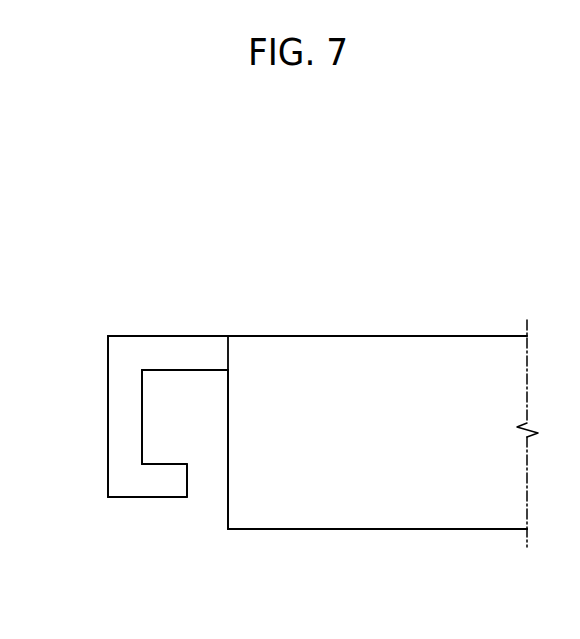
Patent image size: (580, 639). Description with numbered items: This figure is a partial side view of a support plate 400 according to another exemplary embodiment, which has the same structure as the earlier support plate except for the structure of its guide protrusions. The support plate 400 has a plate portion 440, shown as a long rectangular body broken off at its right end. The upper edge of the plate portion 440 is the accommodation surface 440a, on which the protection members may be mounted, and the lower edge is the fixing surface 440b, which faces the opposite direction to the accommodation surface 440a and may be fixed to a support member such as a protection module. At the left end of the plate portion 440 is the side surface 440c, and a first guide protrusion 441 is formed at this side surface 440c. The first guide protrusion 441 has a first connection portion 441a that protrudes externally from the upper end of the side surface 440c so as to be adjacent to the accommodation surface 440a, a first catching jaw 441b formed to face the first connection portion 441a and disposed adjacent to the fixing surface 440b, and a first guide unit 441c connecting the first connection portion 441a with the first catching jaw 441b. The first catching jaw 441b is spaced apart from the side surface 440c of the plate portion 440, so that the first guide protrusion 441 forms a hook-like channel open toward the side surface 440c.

The support plate 400 is at (108, 221).
The plate portion 440 is at (428, 322).
The accommodation surface 440a is at (323, 337).
The fixing surface 440b is at (377, 530).
The side surface 440c is at (228, 497).
The first guide protrusion 441 is at (122, 324).
The first connection portion 441a is at (165, 336).
The first catching jaw 441b is at (145, 497).
The first guide unit 441c is at (108, 415).